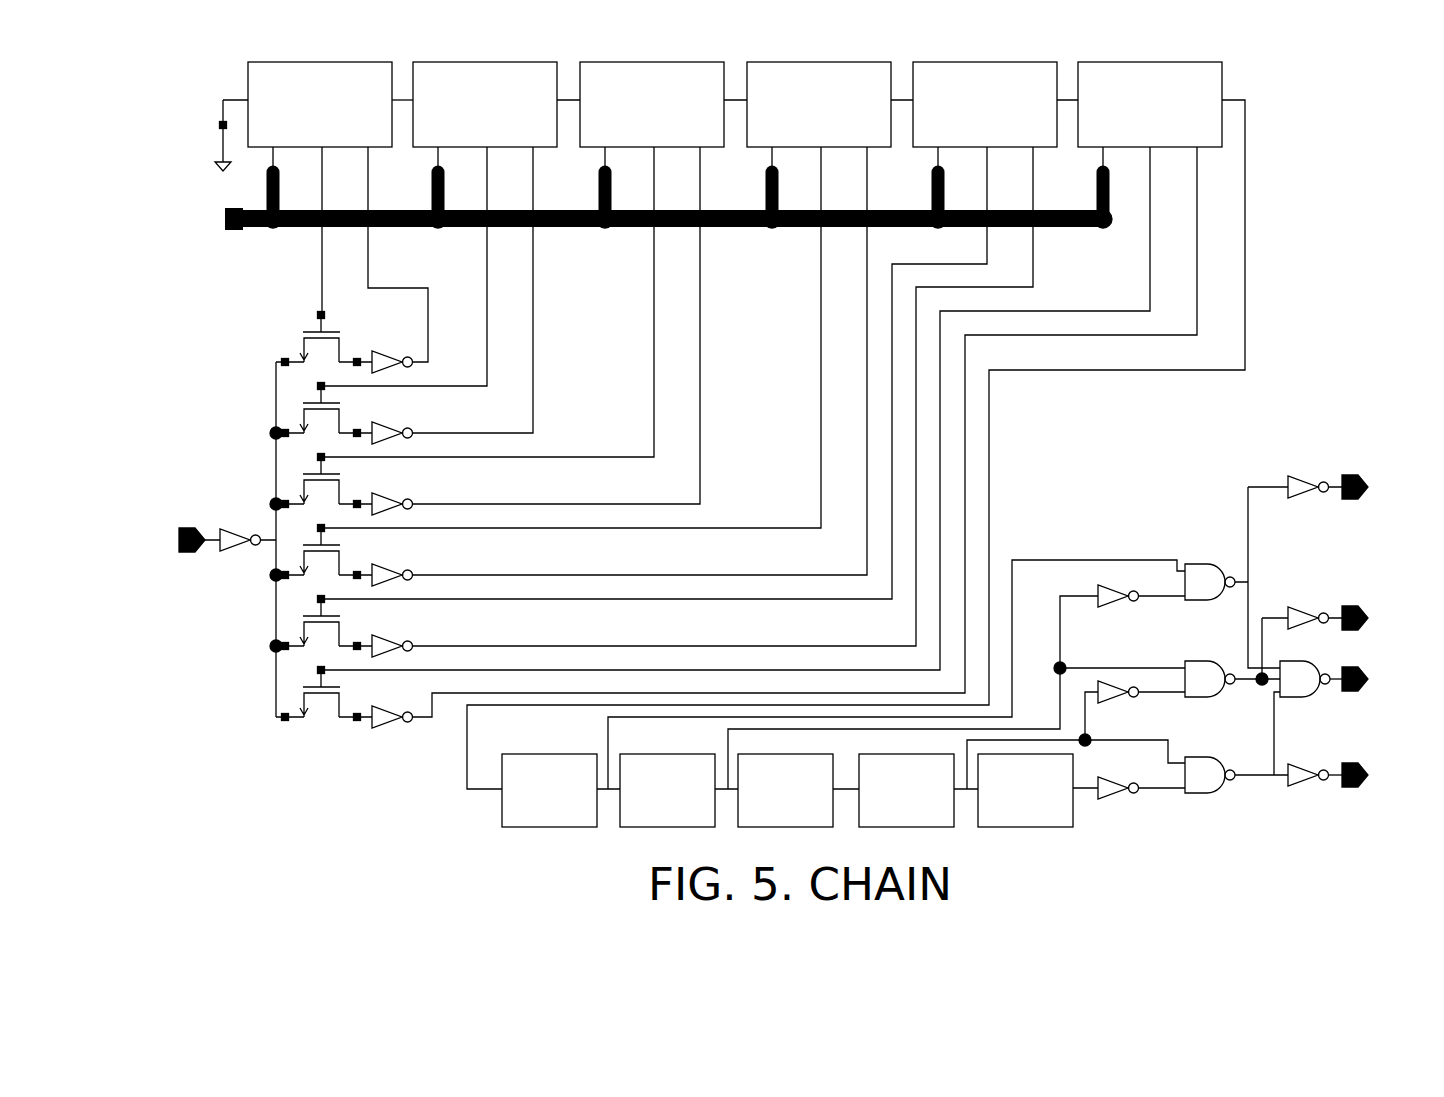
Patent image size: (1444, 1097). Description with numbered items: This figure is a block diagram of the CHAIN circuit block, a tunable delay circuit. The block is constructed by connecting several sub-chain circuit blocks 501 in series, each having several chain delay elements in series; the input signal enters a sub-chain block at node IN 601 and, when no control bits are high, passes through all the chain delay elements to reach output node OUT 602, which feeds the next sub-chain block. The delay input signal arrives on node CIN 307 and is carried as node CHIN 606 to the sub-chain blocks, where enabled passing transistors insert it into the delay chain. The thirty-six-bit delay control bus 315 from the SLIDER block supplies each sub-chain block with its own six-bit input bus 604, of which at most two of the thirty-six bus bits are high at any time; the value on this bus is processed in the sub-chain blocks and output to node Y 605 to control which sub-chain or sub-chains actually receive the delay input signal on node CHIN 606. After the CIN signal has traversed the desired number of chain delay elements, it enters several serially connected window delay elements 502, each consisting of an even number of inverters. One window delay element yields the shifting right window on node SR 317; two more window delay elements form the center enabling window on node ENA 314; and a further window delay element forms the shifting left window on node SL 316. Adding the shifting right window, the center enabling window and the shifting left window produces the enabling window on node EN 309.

The sub-chain circuit block 501 is at (247, 72).
The node IN 601 is at (223, 100).
The input bus SHF[0:5] 604 is at (267, 193).
The bus SHF[0:35] 315 is at (228, 233).
The output node OUT 602 is at (400, 100).
The node CHIN 606 is at (367, 243).
The node Y 605 is at (317, 302).
The node CIN 307 is at (195, 552).
The node SR 317 is at (1355, 475).
The node ENA 314 is at (1355, 606).
The node EN 309 is at (1342, 691).
The node SL 316 is at (1350, 787).
The window delay element 502 is at (502, 815).